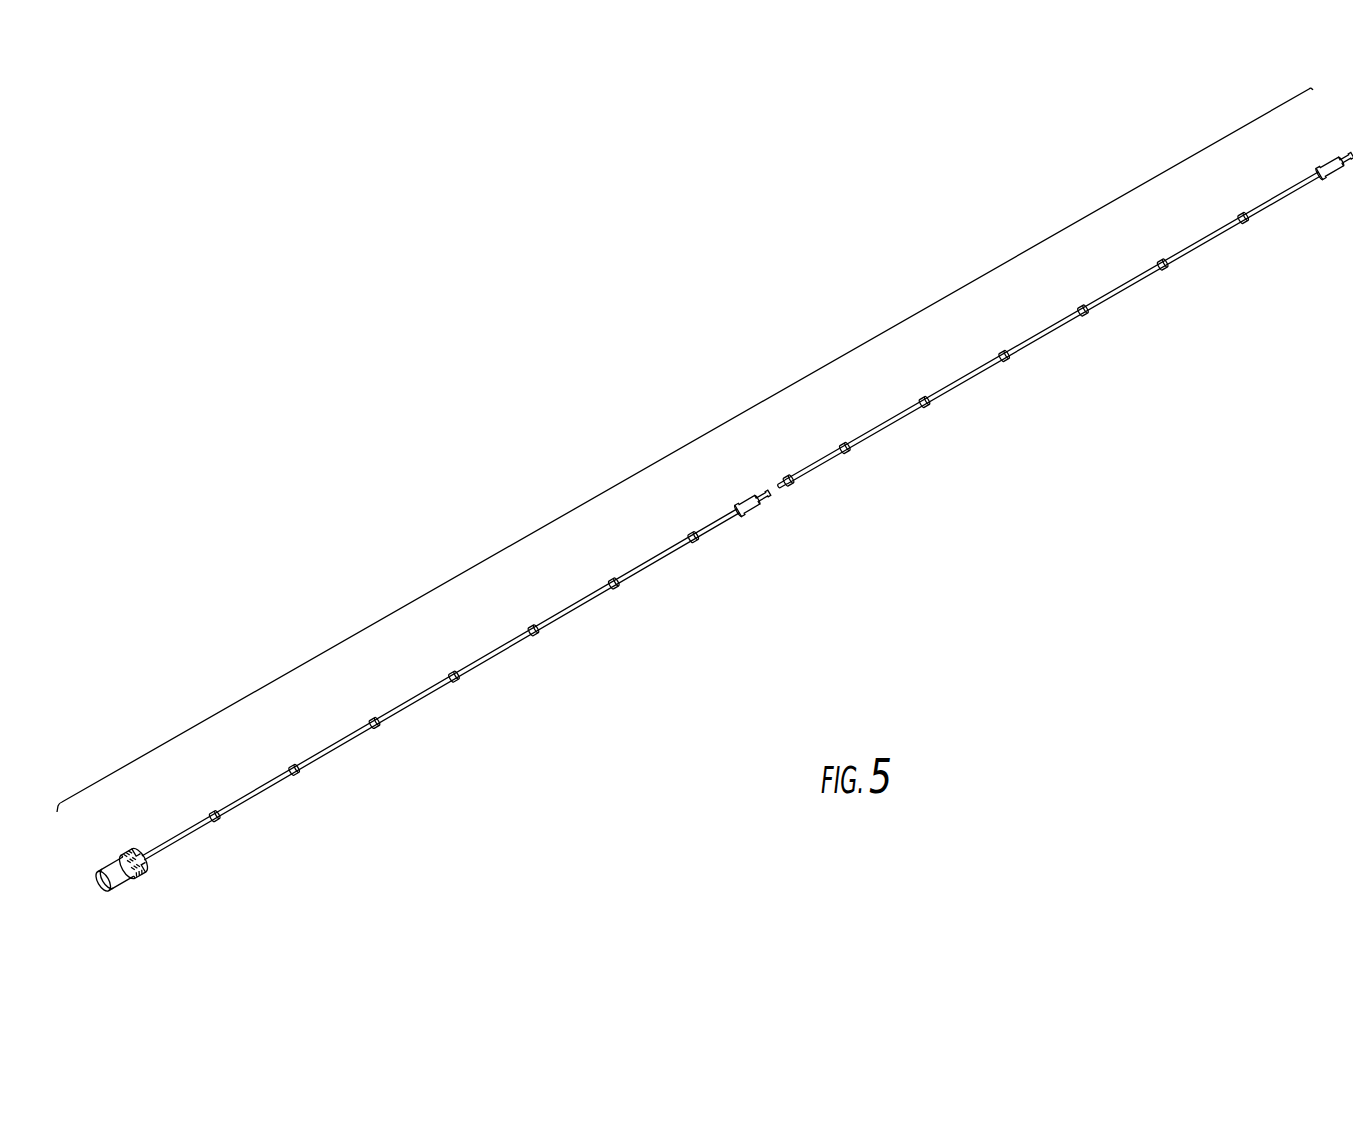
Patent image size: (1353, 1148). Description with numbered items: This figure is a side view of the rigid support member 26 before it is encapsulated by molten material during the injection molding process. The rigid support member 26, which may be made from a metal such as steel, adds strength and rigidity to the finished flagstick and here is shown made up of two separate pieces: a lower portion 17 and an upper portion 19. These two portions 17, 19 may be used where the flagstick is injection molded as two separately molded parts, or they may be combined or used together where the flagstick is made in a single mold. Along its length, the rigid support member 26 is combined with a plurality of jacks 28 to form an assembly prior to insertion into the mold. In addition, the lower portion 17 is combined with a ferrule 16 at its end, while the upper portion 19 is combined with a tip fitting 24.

The ferrule 16 is at (125, 881).
The lower portion 17 is at (405, 708).
The upper portion 19 is at (1050, 336).
The tip fitting 24 is at (748, 499).
The rigid support member 26 is at (717, 428).
The jacks 28 is at (612, 578).